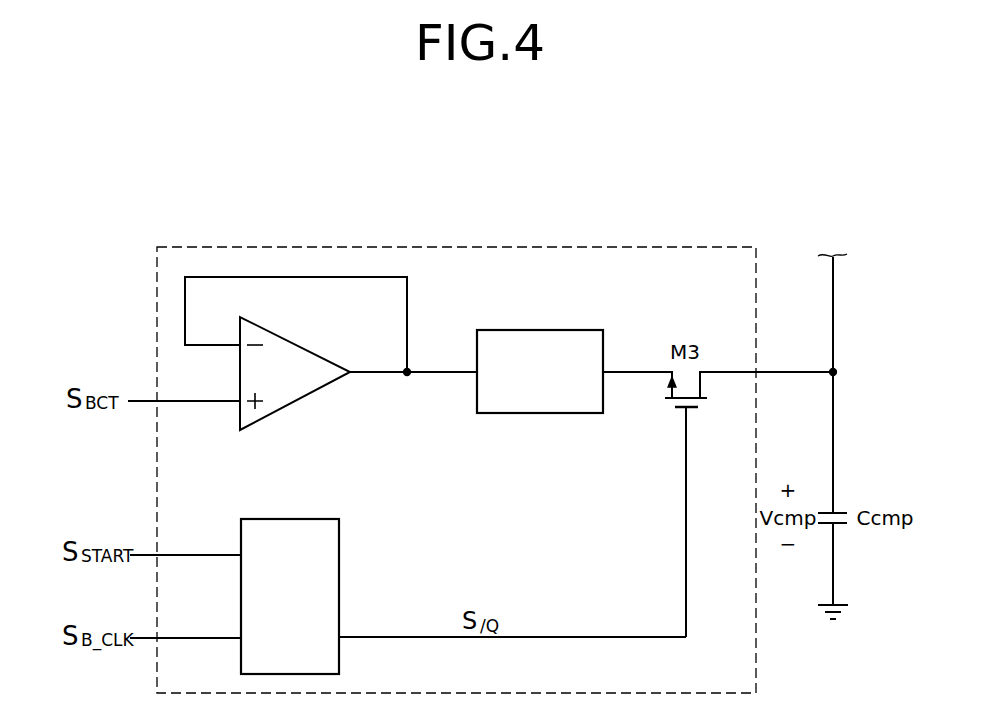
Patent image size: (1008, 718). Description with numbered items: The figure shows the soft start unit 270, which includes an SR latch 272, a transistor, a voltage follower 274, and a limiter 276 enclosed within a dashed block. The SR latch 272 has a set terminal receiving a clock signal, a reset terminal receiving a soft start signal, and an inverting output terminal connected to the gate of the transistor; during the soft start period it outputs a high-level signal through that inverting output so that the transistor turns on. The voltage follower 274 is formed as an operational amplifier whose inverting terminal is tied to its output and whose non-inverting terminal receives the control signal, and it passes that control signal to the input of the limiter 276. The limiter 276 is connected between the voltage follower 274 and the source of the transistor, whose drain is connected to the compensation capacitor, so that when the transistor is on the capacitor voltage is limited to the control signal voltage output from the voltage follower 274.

The soft start unit 270 is at (614, 246).
The SR latch 272 is at (340, 550).
The voltage follower 274 is at (298, 402).
The limiter 276 is at (538, 330).